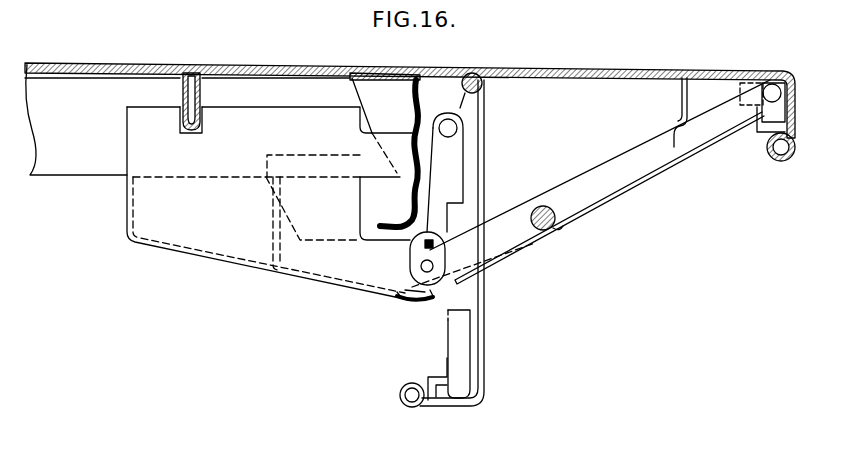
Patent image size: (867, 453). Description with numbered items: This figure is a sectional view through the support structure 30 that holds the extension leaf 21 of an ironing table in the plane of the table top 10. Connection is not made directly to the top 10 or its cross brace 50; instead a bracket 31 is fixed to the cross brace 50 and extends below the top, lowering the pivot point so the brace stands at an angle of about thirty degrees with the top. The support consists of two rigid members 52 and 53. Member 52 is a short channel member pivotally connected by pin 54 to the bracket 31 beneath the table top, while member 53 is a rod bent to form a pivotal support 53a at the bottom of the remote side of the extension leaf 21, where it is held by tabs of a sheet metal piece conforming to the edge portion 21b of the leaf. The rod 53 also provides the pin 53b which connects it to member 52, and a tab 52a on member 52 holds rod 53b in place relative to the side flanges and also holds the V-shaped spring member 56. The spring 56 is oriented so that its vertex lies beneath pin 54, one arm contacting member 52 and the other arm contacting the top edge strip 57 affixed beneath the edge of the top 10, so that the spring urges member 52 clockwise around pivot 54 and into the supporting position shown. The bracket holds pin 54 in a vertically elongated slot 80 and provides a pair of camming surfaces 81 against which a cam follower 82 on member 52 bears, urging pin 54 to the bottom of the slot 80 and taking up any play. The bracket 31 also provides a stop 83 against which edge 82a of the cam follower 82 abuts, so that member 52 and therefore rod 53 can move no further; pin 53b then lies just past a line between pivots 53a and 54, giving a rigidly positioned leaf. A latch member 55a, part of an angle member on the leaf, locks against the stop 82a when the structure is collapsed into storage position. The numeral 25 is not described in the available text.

The table top 10 is at (273, 62).
The extension leaf 21 is at (636, 70).
The edge portion 21b is at (795, 112).
The hinge pin 25 is at (467, 74).
The support structure 30 is at (446, 336).
The bracket 31 is at (252, 248).
The cross brace 50 is at (86, 165).
The rigid member 52 is at (462, 157).
The tab 52a is at (468, 109).
The rigid member 53 is at (630, 168).
The pivotal support 53a is at (743, 107).
The pin 53b is at (443, 113).
The pin 54 is at (420, 263).
The latch member 55a is at (683, 106).
The V-shaped spring member 56 is at (440, 182).
The top edge strip 57 is at (410, 100).
The slot 80 is at (436, 246).
The camming surfaces 81 is at (432, 297).
The cam follower 82 is at (418, 299).
The edge 82a is at (412, 290).
The stop 83 is at (400, 294).